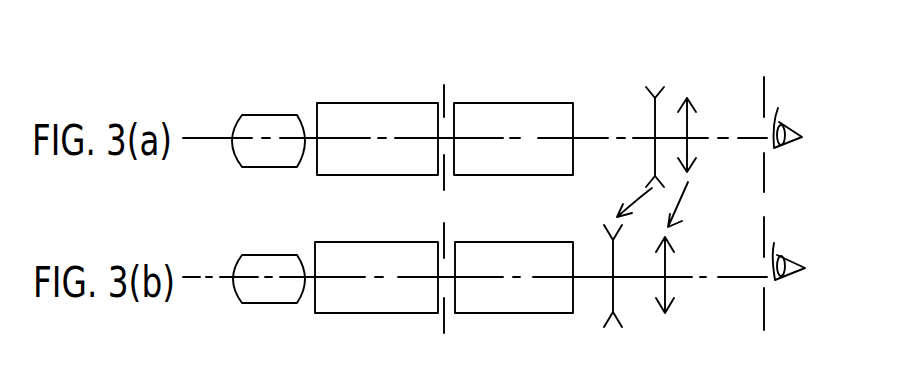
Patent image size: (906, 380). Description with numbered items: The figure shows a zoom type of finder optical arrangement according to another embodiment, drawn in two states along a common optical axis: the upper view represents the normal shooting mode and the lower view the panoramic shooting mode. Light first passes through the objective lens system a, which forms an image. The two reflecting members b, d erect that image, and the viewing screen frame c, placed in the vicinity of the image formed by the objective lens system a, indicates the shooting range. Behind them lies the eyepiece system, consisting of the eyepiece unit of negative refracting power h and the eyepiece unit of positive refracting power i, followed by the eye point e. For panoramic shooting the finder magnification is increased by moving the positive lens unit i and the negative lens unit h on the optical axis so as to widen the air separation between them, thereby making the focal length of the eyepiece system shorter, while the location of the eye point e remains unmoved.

In FIG. 3A, the objective lens system a is at (263, 115).
In FIG. 3B, the objective lens system a is at (269, 279).
In FIG. 3A, the reflecting member b is at (368, 103).
In FIG. 3B, the reflecting member b is at (376, 277).
In FIG. 3A, the viewing screen frame c is at (447, 92).
In FIG. 3A, the reflecting member d is at (525, 103).
In FIG. 3B, the reflecting member d is at (514, 277).
In FIG. 3A, the eyepiece unit of negative refracting power h is at (650, 87).
In FIG. 3B, the eyepiece unit of negative refracting power h is at (613, 276).
In FIG. 3A, the eyepiece unit of positive refracting power i is at (690, 97).
In FIG. 3B, the eyepiece unit of positive refracting power i is at (665, 275).
In FIG. 3A, the eye point e is at (765, 93).
In FIG. 3B, the eye point e is at (784, 273).